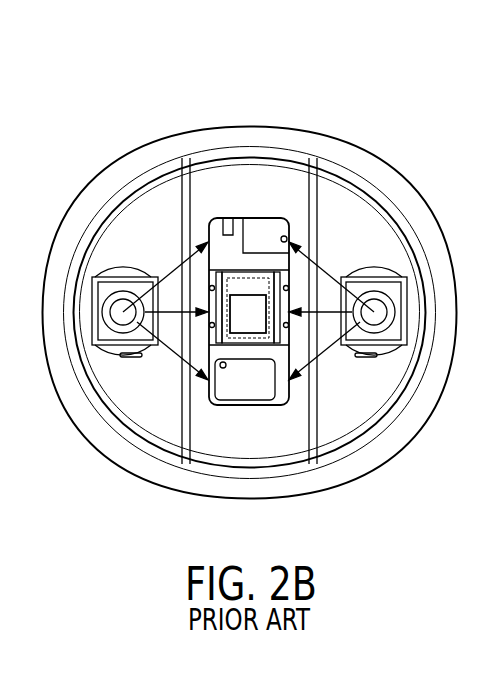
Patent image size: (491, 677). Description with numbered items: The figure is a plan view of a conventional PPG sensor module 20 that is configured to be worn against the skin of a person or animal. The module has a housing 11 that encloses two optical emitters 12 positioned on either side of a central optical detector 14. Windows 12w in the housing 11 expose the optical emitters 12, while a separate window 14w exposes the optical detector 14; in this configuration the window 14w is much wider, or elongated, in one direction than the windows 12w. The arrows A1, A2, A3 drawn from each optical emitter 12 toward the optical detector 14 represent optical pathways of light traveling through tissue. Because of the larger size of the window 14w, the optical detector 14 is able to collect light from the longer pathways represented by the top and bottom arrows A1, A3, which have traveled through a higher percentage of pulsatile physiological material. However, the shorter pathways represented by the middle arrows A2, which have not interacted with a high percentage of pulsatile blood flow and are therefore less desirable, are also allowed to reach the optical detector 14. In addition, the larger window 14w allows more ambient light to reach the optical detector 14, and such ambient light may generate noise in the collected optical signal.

The housing 11 is at (42, 318).
The optical emitters 12 is at (123, 310).
The windows 12w is at (127, 266).
The optical detector 14 is at (248, 307).
The window 14w is at (234, 220).
The PPG sensor module 20 is at (404, 82).
The arrow A1 is at (200, 255).
The arrow A2 is at (372, 267).
The arrow A3 is at (193, 367).